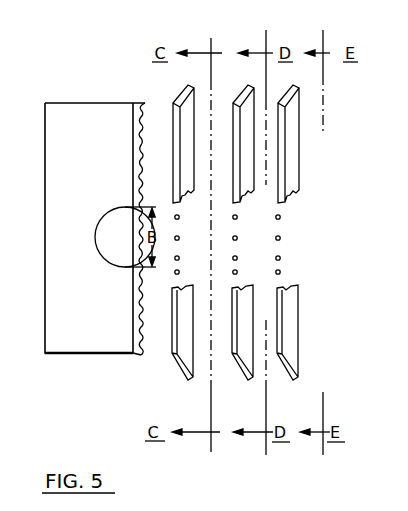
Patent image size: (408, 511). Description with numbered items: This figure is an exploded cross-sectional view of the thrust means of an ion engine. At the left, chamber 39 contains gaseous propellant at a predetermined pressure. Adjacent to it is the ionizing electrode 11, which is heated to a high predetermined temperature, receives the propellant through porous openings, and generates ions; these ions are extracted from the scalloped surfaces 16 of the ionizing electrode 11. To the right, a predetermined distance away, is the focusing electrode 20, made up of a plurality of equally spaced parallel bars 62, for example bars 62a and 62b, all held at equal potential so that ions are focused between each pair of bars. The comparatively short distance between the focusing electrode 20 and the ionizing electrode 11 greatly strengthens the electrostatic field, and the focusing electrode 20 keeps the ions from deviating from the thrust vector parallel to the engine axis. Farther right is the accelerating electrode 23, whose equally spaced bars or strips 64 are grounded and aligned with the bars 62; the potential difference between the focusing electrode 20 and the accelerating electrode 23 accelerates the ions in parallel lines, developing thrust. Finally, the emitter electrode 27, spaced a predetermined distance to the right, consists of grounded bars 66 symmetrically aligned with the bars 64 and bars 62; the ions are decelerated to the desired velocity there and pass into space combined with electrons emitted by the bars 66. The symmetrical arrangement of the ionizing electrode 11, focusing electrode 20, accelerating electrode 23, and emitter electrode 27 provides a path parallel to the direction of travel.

The chamber 39 is at (100, 130).
The ionizing electrode 11 is at (139, 103).
The scalloped surfaces 16 is at (140, 356).
The focusing electrode 20 is at (188, 85).
The accelerating electrode 23 is at (249, 85).
The emitter electrode 27 is at (300, 86).
The bars 62 is at (172, 263).
The bar 62a is at (180, 219).
The bar 62b is at (180, 241).
The bars or strips 64 is at (242, 240).
The bars 66 is at (286, 224).